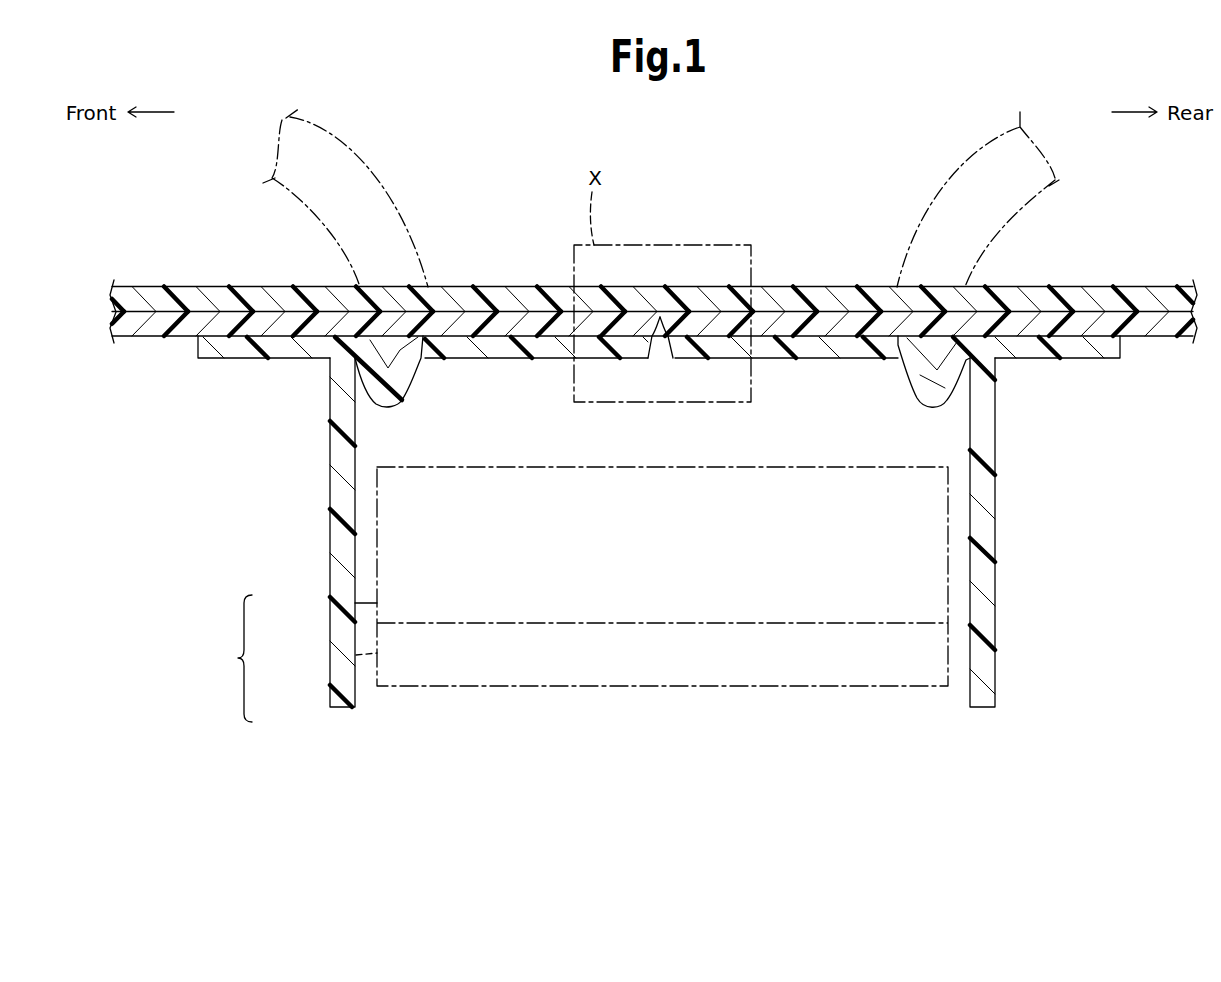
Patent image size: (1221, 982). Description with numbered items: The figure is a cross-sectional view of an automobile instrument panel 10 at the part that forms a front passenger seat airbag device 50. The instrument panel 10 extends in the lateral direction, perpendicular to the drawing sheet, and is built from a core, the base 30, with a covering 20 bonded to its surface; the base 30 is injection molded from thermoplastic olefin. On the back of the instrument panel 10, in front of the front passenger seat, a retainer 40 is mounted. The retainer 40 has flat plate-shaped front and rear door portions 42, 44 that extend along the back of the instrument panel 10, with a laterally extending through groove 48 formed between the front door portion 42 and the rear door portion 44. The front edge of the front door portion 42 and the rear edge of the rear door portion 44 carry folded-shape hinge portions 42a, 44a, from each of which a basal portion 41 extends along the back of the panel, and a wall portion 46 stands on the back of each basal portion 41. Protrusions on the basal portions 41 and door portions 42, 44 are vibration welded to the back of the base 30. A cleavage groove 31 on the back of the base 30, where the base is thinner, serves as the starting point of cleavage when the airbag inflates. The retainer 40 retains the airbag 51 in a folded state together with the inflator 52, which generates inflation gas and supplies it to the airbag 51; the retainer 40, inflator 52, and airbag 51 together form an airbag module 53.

The instrument panel 10 is at (814, 255).
The covering 20 is at (113, 300).
The base 30 is at (113, 328).
The cleavage groove 31 is at (655, 345).
The retainer 40 is at (659, 538).
The basal portion 41 is at (252, 360).
The front door portion 42 is at (500, 360).
The hinge portion 42a is at (403, 401).
The rear door portion 44 is at (818, 360).
The hinge portion 44a is at (918, 398).
The wall portion 46 is at (341, 709).
The through groove 48 is at (668, 350).
The front passenger seat airbag device 50 is at (450, 762).
The airbag 51 is at (350, 605).
The inflator 52 is at (356, 655).
The airbag module 53 is at (229, 658).